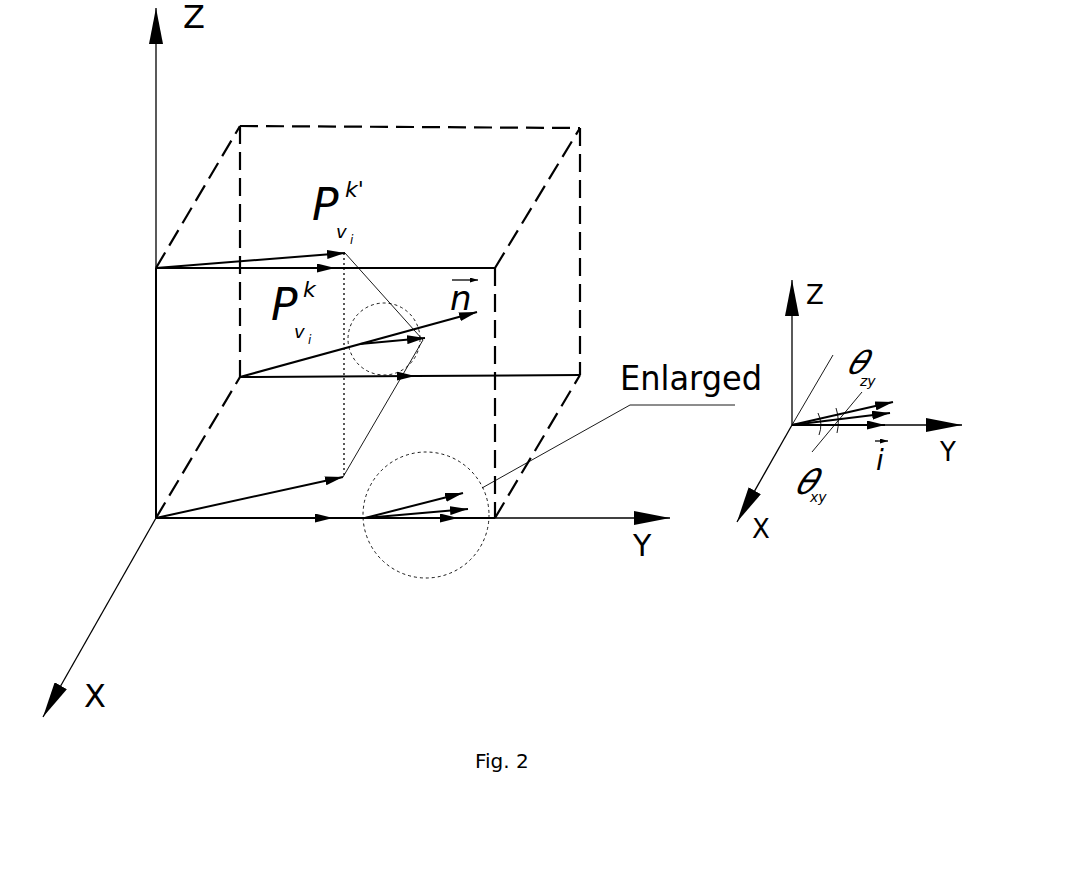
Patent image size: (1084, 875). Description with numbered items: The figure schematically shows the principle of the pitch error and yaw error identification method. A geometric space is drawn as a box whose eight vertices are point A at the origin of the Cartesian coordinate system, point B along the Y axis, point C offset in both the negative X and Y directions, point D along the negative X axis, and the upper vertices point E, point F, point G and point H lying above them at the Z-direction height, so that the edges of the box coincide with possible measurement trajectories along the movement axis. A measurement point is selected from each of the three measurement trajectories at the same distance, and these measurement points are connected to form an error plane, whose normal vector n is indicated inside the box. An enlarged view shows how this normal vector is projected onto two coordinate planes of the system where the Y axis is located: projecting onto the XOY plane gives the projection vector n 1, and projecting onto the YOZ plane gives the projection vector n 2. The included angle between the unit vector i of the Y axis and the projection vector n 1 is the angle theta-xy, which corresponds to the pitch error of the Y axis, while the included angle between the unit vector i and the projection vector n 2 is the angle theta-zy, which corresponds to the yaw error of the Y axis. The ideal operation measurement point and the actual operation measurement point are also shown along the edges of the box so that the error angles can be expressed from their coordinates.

The point A is at (186, 456).
The point B is at (537, 465).
The point C is at (594, 263).
The point D is at (225, 257).
The point E is at (185, 209).
The point F is at (509, 388).
The point G is at (552, 185).
The point H is at (399, 111).
The projection vector n1 1 is at (900, 366).
The projection vector n2 2 is at (915, 397).